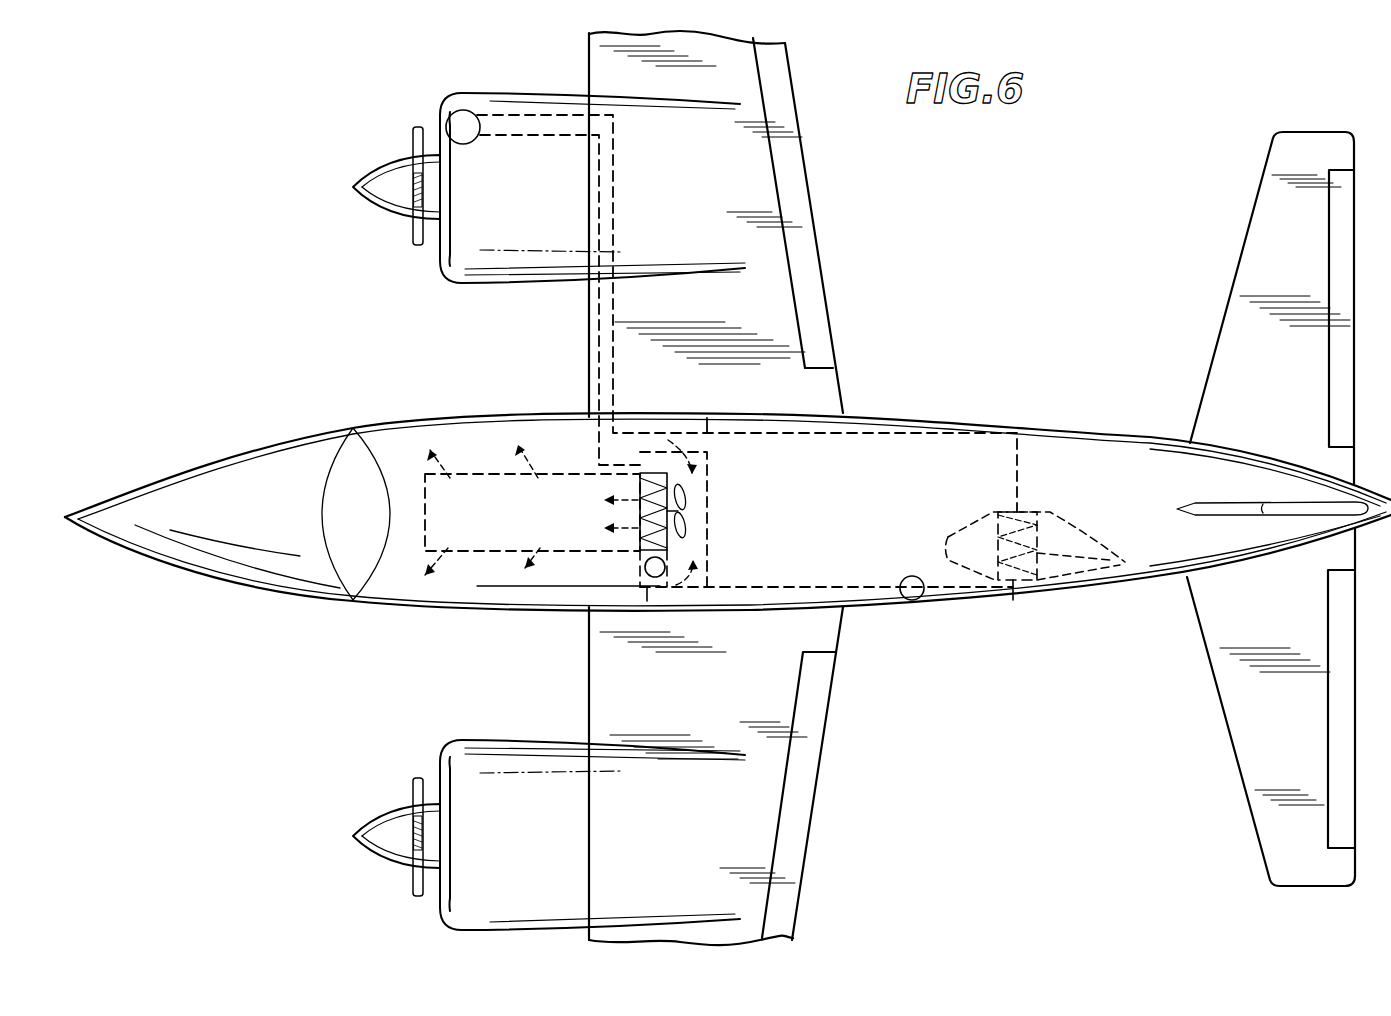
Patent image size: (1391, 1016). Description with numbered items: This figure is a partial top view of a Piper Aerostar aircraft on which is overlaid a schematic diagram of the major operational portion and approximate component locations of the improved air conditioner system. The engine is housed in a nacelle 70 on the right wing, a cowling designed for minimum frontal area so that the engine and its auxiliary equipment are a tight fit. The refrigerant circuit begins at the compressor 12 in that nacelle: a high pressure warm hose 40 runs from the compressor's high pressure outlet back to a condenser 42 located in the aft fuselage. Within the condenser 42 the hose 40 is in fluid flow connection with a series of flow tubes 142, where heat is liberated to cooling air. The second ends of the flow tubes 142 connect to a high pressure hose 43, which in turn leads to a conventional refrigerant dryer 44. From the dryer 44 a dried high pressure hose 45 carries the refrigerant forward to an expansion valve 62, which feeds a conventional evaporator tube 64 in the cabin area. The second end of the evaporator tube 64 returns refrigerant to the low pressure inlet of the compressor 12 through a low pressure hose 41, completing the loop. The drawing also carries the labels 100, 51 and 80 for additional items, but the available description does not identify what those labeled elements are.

The compressor 12 is at (465, 100).
The nacelle 70 is at (442, 272).
The high pressure warm hose 40 is at (617, 358).
The low pressure hose 41 is at (596, 343).
The cabin compartment 100 is at (465, 603).
The evaporator tube 64 is at (640, 540).
The expansion valve 62 is at (650, 580).
The high pressure hose (dried) 45 is at (770, 587).
The refrigerant dryer 44 is at (920, 600).
The high pressure hose 43 is at (1015, 588).
The air inlet 51 is at (947, 548).
The condenser 42 is at (1026, 531).
The flow tubes 142 is at (1010, 512).
The fuselage 80 is at (1162, 578).